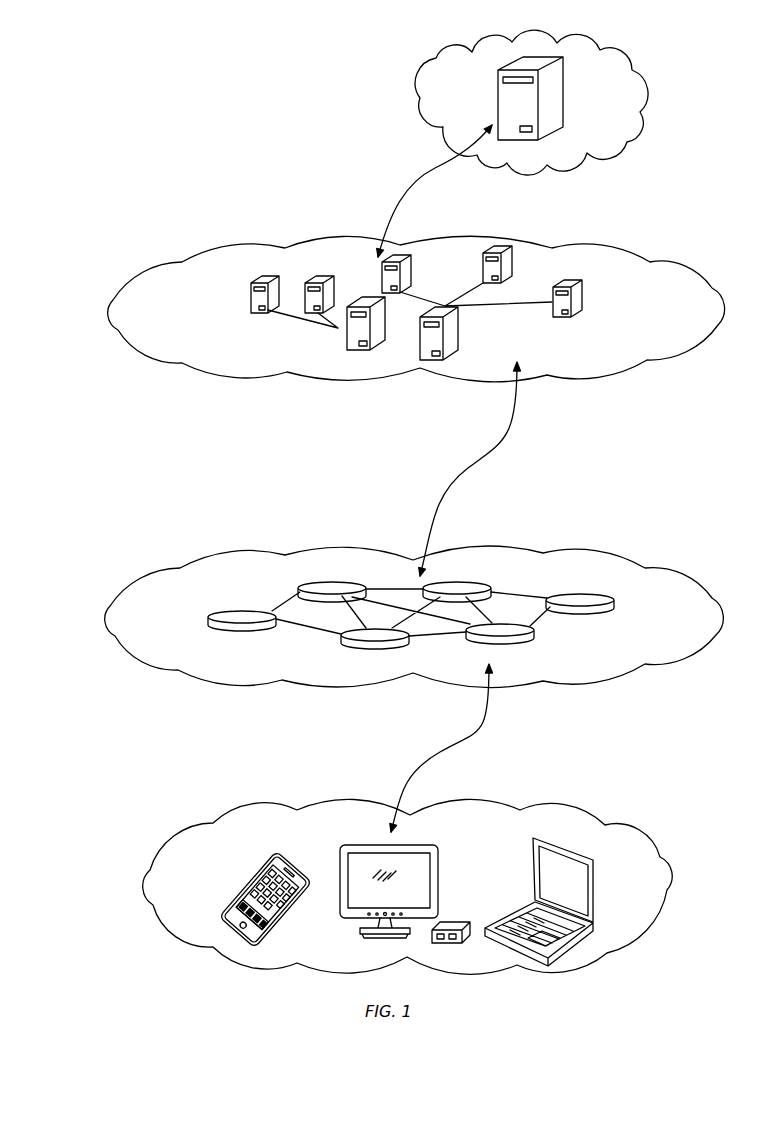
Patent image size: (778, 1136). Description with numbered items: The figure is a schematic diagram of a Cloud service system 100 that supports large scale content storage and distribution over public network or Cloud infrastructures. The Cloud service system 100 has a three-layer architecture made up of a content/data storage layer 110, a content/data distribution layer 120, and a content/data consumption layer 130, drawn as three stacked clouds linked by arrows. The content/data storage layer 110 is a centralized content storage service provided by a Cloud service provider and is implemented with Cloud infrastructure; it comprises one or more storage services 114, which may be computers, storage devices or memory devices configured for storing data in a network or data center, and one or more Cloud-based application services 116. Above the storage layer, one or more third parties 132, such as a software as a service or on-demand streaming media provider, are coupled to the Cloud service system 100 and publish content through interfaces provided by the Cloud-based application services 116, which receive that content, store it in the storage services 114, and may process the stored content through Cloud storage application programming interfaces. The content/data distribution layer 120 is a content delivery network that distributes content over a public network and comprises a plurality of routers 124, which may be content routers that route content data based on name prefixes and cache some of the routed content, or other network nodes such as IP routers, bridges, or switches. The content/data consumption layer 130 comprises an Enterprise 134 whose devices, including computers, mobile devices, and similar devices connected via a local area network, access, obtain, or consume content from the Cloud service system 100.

The Cloud service system 100 is at (102, 245).
The content/data storage layer 110 is at (730, 223).
The storage services 114 is at (250, 297).
The Cloud-based application services 116 is at (345, 337).
The content/data distribution layer 120 is at (730, 532).
The routers 124 is at (208, 616).
The content/data consumption layer 130 is at (681, 792).
The third parties 132 is at (636, 51).
The Enterprise 134 is at (622, 828).